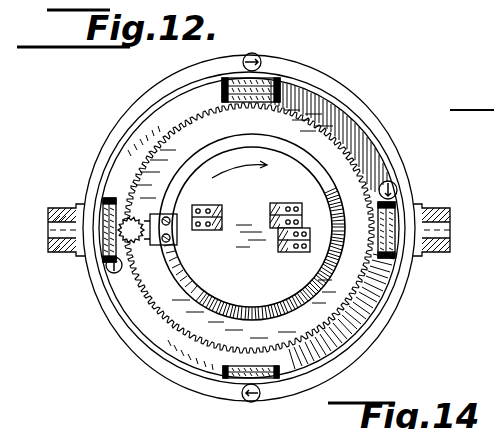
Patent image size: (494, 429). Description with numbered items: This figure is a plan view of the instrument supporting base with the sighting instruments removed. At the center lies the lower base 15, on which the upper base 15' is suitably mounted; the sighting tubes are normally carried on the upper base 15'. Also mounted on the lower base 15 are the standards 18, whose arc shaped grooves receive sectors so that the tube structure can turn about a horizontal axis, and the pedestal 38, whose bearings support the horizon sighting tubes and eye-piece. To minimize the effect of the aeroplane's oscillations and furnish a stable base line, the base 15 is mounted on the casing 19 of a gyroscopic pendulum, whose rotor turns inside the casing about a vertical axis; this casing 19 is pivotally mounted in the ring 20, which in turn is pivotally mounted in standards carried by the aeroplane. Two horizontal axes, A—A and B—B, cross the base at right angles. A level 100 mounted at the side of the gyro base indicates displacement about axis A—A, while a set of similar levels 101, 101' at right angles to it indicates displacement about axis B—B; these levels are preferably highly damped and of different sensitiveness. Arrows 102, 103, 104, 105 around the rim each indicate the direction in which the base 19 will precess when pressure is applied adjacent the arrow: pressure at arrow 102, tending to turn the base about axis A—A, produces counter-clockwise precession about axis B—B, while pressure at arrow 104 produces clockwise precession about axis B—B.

The lower base 15 is at (252, 227).
The upper base 15' is at (238, 249).
The standards 18 is at (223, 206).
The casing of gyroscopic pendulum 19 is at (340, 112).
The ring 20 is at (380, 122).
The pedestal 38 is at (283, 253).
The level 100 is at (237, 234).
The level 101 is at (249, 215).
The level 101' is at (283, 347).
The arrow 102 is at (256, 400).
The arrow 103 is at (396, 190).
The arrow 104 is at (254, 54).
The arrow 105 is at (110, 276).
The horizontal axis A— A is at (47, 227).
The horizontal axis B— B is at (258, 72).